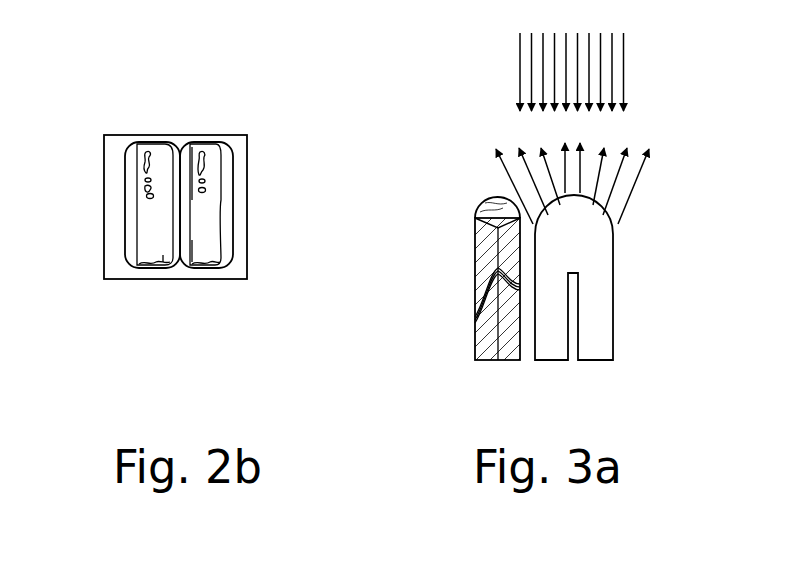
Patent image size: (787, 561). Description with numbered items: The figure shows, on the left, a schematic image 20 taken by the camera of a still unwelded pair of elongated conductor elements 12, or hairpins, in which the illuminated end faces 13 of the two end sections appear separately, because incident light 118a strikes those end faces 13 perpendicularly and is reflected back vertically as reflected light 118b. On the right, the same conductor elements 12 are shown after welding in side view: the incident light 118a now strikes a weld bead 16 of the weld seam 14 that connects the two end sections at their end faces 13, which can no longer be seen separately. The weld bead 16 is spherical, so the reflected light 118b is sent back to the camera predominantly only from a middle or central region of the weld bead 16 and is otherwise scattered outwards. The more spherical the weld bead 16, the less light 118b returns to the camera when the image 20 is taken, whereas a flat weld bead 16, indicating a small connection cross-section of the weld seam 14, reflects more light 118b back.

In FIG. 2B, the conductor element 12 is at (0, 323).
In FIG. 3A, the conductor element 12 is at (475, 248).
In FIG. 2B, the end face 13 is at (127, 175).
In FIG. 3A, the weld seam 14 is at (475, 220).
In FIG. 3A, the weld bead 16 is at (493, 200).
In FIG. 2B, the image 20 is at (105, 136).
In FIG. 3A, the image 20 is at (778, 187).
In FIG. 3A, the incident light 118a is at (520, 43).
In FIG. 2B, the reflected light 118b is at (0, 115).
In FIG. 3A, the reflected light 118b is at (633, 183).